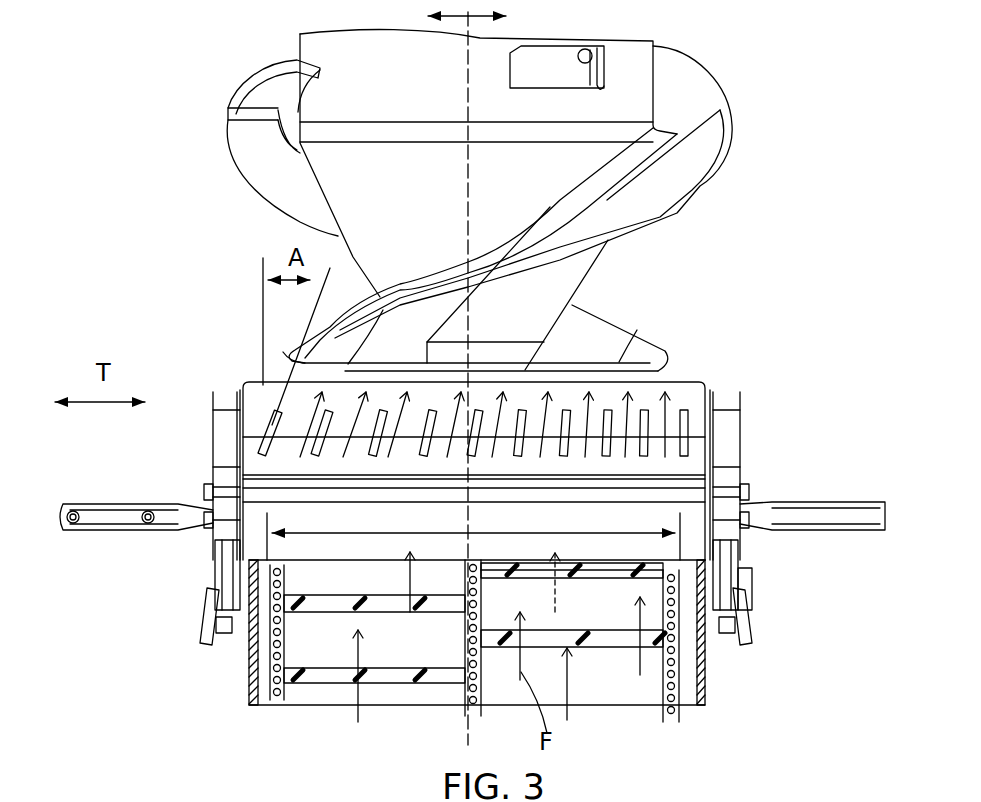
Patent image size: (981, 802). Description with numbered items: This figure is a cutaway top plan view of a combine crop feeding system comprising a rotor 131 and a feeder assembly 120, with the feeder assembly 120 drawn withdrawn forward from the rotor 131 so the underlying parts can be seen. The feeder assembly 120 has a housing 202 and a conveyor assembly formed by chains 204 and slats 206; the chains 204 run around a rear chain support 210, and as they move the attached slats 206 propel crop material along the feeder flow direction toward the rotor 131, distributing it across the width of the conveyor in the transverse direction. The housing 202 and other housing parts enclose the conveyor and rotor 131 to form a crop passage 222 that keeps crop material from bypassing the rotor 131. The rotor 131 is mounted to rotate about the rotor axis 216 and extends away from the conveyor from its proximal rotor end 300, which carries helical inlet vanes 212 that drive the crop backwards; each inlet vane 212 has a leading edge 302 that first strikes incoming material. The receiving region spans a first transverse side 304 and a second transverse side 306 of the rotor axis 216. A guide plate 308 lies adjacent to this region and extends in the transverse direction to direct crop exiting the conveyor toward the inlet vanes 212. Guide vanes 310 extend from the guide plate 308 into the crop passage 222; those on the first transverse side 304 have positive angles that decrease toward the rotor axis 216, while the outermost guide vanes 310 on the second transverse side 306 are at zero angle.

The feeder assembly 120 is at (236, 662).
The rotor 131 is at (327, 46).
The housing 202 is at (697, 673).
The chains 204 is at (676, 722).
The slats 206 is at (603, 638).
The rear chain support 210 is at (465, 618).
The inlet vanes 212 is at (258, 164).
The rotor axis 216 is at (466, 100).
The crop passage 222 is at (684, 530).
The proximal rotor end 300 is at (505, 367).
The leading edge 302 is at (383, 310).
The first transverse side 304 is at (425, 18).
The second transverse side 306 is at (510, 18).
The guide plate 308 is at (690, 382).
The guide vanes 310 is at (268, 430).